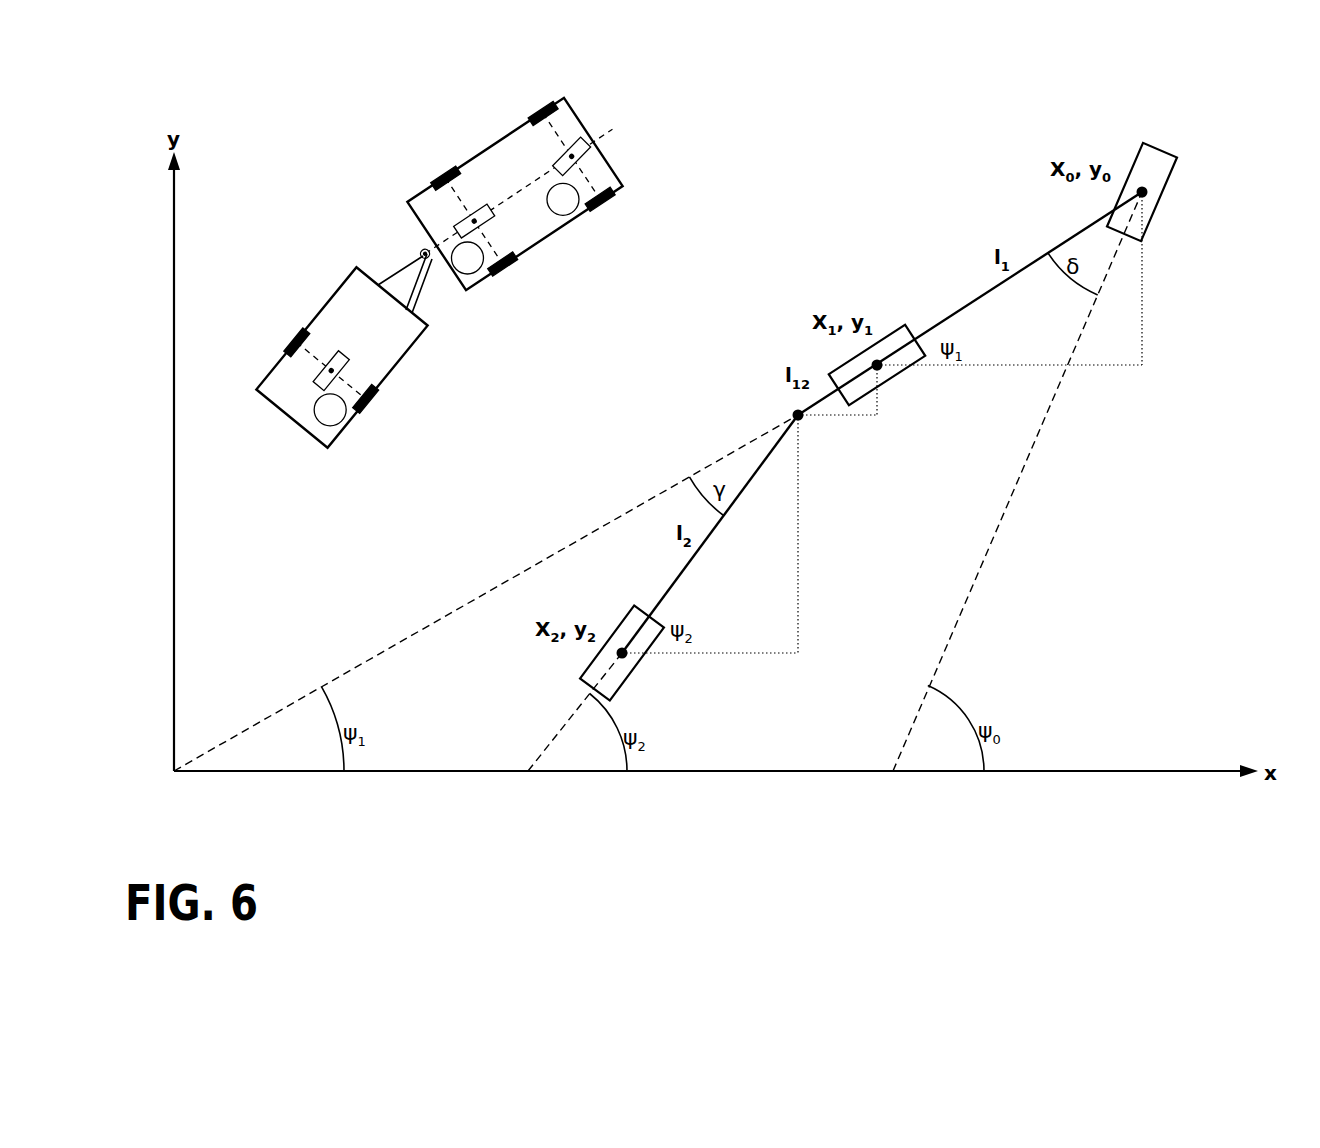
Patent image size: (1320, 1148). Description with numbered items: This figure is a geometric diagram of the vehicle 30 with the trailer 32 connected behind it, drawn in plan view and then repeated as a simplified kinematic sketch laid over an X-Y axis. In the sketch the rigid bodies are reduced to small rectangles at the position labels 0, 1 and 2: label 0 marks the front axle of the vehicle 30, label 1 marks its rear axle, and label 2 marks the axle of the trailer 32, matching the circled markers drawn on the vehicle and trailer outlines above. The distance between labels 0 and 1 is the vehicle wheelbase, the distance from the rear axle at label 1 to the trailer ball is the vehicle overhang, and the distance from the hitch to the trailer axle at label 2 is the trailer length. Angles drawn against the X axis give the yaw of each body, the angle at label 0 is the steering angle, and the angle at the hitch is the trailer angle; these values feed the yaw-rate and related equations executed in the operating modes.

The vehicle 30 is at (478, 152).
The trailer 32 is at (328, 299).
The vehicle unit 0 (front axle point) 0 is at (1142, 162).
The vehicle unit 1 (rear axle point) 1 is at (877, 310).
The trailer unit 2 (trailer axle point) 2 is at (622, 623).